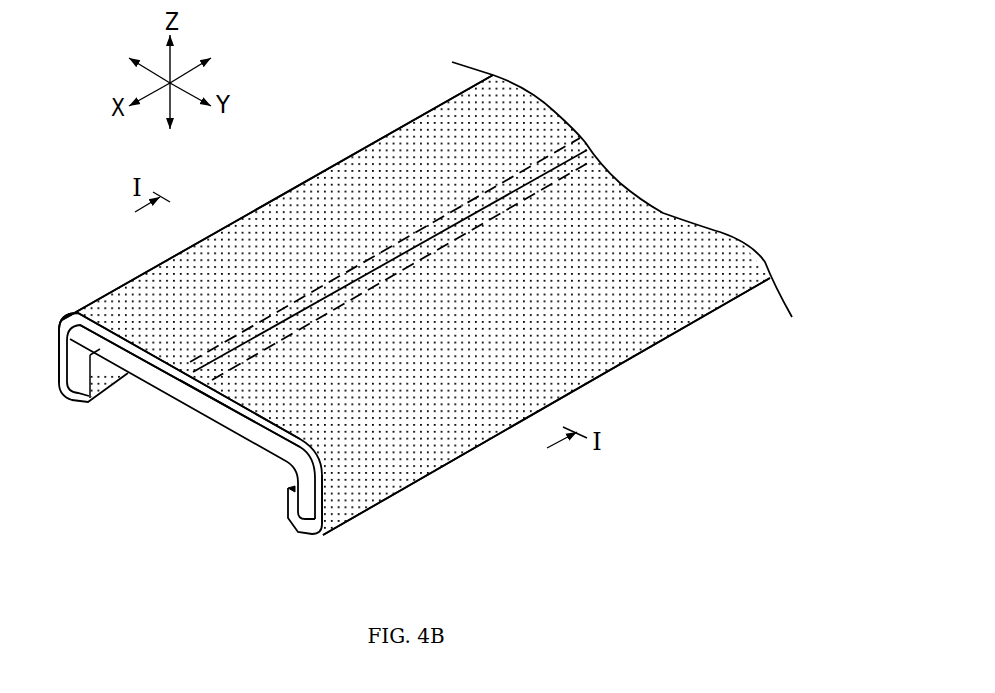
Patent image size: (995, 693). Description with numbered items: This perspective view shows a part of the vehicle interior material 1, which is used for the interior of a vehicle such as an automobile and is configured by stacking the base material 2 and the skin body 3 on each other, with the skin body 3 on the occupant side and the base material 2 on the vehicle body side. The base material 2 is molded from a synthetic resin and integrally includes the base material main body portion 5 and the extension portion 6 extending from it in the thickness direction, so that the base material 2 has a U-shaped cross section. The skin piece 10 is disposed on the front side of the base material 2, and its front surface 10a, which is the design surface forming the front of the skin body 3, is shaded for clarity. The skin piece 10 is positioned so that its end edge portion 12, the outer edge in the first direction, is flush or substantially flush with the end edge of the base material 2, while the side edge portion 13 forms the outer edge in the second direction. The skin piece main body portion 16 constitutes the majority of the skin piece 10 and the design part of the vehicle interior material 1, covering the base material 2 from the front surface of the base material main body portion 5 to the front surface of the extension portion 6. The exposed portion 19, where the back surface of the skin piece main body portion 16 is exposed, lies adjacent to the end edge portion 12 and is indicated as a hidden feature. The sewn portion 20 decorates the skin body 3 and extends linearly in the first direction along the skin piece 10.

The vehicle interior material 1 is at (637, 367).
The base material 2 is at (83, 343).
The skin body 3 is at (125, 284).
The base material main body portion 5 is at (200, 397).
The extension portion 6 is at (77, 362).
The skin piece 10 is at (293, 207).
The front surface 10a is at (253, 220).
The end edge portion 12 is at (148, 362).
The side edge portion 13 is at (95, 395).
The skin piece main body portion 16 is at (112, 307).
The exposed portion 19 is at (174, 370).
The sewn portion 20 is at (252, 328).